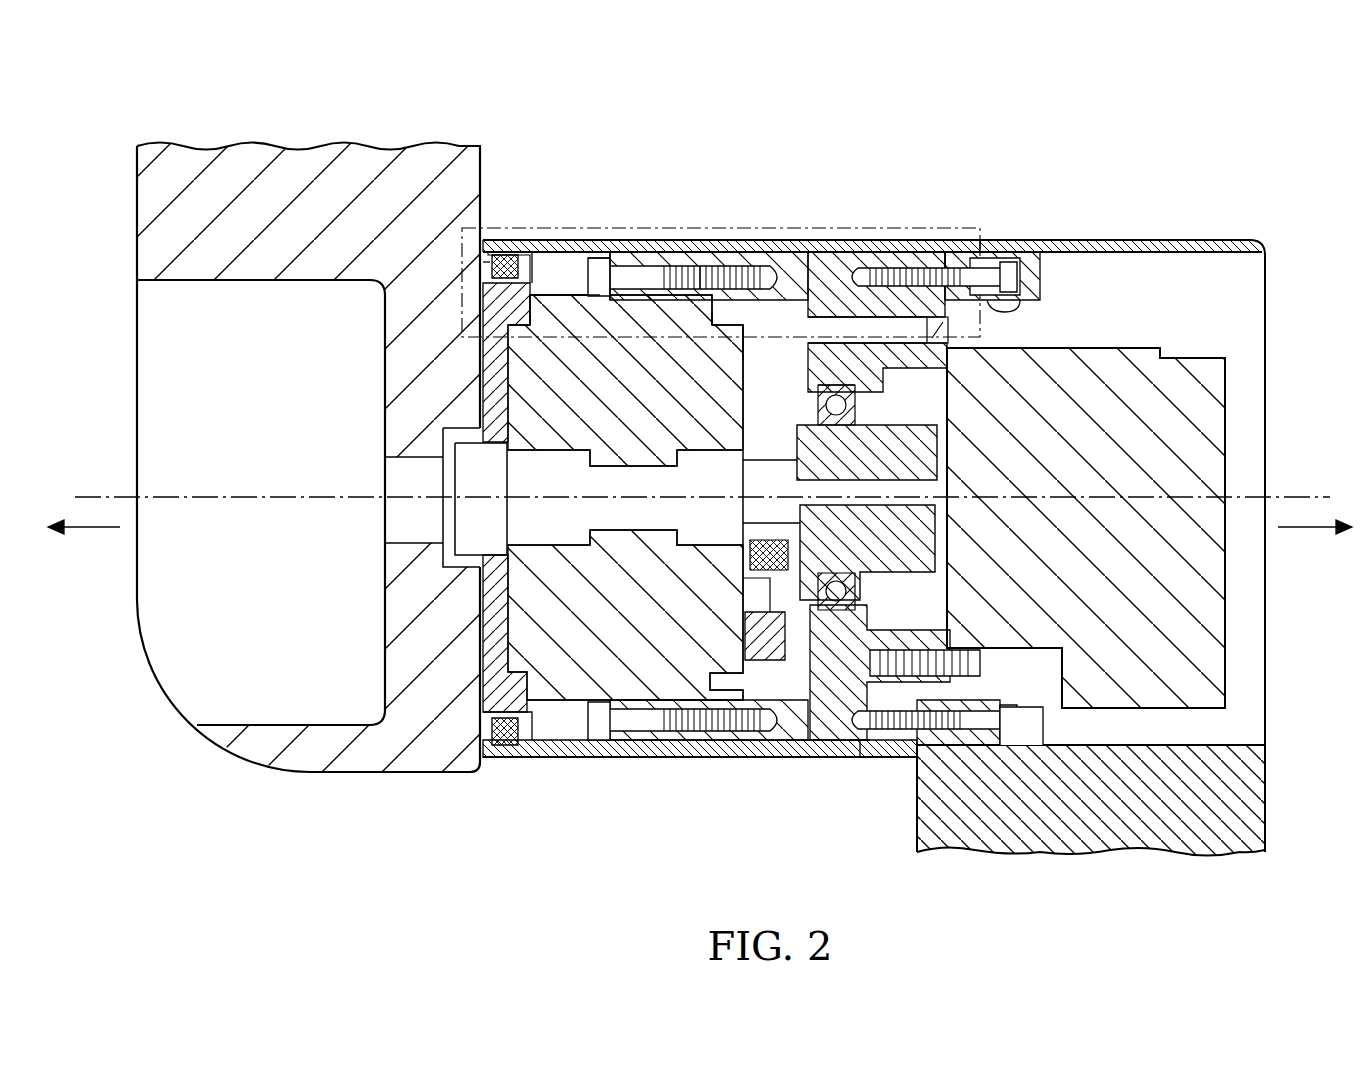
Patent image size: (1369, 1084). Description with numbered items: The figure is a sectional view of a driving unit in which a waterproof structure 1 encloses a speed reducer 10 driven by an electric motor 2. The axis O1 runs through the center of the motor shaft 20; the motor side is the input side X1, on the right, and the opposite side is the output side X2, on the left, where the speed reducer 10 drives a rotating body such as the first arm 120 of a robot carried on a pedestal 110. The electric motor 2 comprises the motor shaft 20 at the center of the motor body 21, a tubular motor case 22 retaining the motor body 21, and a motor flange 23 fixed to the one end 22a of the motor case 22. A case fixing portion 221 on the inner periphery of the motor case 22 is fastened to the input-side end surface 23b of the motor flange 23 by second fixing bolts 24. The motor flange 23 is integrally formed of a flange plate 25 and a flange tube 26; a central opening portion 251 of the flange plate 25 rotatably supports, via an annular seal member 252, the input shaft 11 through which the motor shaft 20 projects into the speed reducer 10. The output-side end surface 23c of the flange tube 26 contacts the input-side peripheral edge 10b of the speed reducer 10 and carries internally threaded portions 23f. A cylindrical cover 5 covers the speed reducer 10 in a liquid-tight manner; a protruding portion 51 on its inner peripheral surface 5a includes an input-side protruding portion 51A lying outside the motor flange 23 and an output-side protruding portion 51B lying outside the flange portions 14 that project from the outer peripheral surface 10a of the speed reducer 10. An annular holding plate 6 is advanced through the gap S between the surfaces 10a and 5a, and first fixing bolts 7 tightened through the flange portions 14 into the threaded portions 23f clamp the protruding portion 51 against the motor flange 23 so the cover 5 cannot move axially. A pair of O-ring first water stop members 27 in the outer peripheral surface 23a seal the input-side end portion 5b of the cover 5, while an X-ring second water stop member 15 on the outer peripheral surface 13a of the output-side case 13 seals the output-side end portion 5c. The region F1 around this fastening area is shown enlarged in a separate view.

The waterproof structure 1 is at (935, 192).
The electric motor 2 is at (1226, 392).
The cover 5 is at (597, 238).
The inner peripheral surface of the cover 5a is at (803, 252).
The input-side end portion of the cover 5b is at (955, 258).
The output-side end portion of the cover 5c is at (483, 246).
The holding plate 6 is at (573, 268).
The first fixing bolts 7 is at (612, 262).
The speed reducer 10 is at (622, 660).
The outer peripheral surface of the speed reducer 10a is at (557, 292).
The input-side peripheral edge of the speed reducer 10b is at (700, 298).
The input shaft 11 is at (760, 662).
The output-side case 13 is at (505, 760).
The outer peripheral surface of the output-side case 13a is at (520, 250).
The flange portions 14 is at (638, 262).
The second water stop member 15 is at (485, 262).
The motor shaft 20 is at (830, 602).
The motor body 21 is at (1215, 612).
The motor case 22 is at (1190, 240).
The one end of the motor case 22a is at (874, 760).
The motor flange 23 is at (796, 300).
The outer peripheral surface of the motor flange 23a is at (843, 262).
The input-side end surface of the motor flange 23b is at (983, 242).
The output-side end surface of the flange tube 23c is at (728, 320).
The internally threaded portions 23f is at (740, 300).
The second fixing bolts 24 is at (1018, 268).
The flange plate 25 is at (890, 262).
The flange tube 26 is at (810, 262).
The first water stop members 27 is at (860, 760).
The protruding portion 51 is at (636, 108).
The input-side protruding portion 51A is at (718, 262).
The output-side protruding portion 51B is at (645, 262).
The pedestal 110 is at (1230, 800).
The first arm 120 is at (300, 165).
The case fixing portion 221 is at (1018, 290).
The central opening portion 251 is at (768, 592).
The annular seal member 252 is at (878, 262).
The region F1 is at (965, 232).
The axis O1 is at (1293, 497).
The gap S is at (540, 287).
The input side X1 is at (1315, 542).
The output side X2 is at (84, 542).